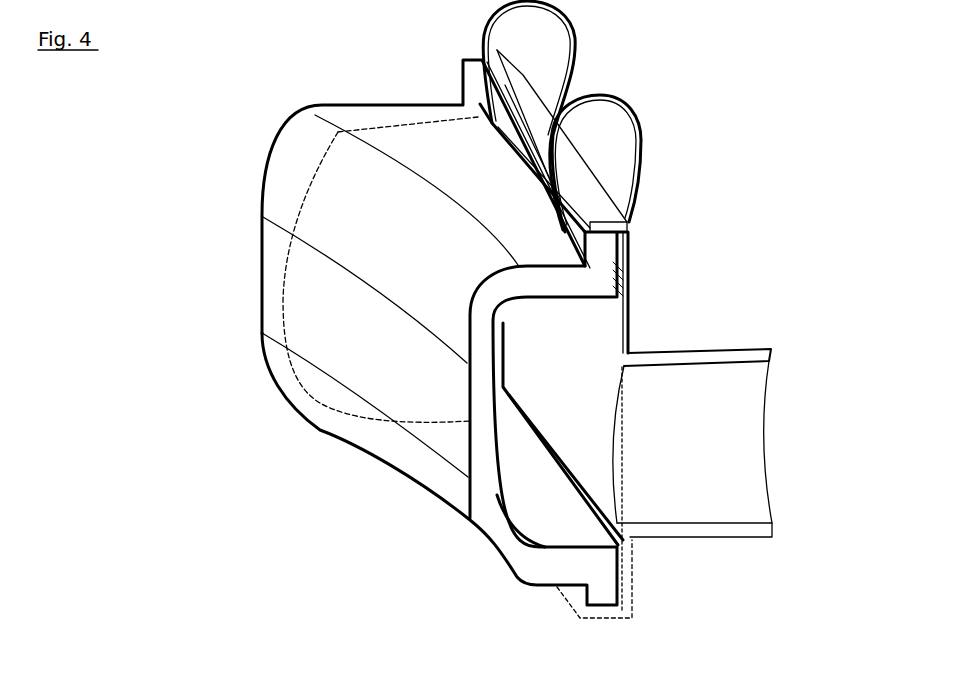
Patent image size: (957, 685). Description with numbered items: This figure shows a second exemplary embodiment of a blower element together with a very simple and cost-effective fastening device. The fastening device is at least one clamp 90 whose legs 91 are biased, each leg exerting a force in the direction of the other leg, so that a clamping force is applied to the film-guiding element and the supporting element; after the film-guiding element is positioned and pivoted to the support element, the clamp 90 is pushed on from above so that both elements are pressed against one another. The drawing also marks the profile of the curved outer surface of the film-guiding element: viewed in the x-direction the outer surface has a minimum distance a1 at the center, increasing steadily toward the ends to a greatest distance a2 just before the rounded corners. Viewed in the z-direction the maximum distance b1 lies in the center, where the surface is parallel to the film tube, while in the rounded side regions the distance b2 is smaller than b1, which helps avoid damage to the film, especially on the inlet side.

The clamp 90 is at (570, 33).
The legs 91 is at (560, 158).
The minimum distance a1 is at (473, 447).
The greatest distance a2 is at (268, 349).
The distance b1 is at (622, 472).
The distance b2 is at (622, 500).